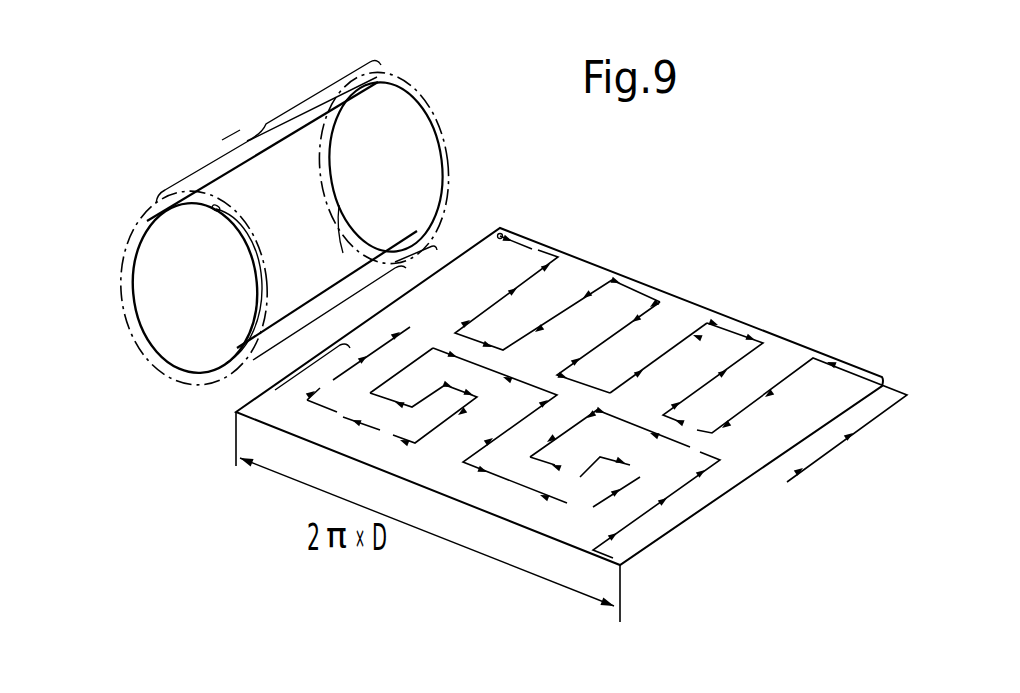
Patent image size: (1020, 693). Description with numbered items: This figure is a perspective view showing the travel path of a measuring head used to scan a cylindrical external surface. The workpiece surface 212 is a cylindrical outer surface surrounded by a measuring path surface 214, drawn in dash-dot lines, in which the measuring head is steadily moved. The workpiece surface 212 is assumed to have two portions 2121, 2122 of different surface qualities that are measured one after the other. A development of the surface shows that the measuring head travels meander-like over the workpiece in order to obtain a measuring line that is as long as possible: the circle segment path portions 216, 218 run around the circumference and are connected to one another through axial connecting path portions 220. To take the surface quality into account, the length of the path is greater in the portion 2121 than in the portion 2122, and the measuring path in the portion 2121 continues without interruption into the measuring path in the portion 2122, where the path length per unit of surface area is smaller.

The workpiece surface 212 is at (438, 127).
The measuring path surface 214 is at (140, 238).
The circle segment path portion 216 is at (645, 288).
The circle segment path portion 218 is at (700, 316).
The axial connecting path portion 220 is at (678, 283).
The first portion of the workpiece surface 2121 is at (180, 402).
The second portion of the workpiece surface 2122 is at (474, 203).